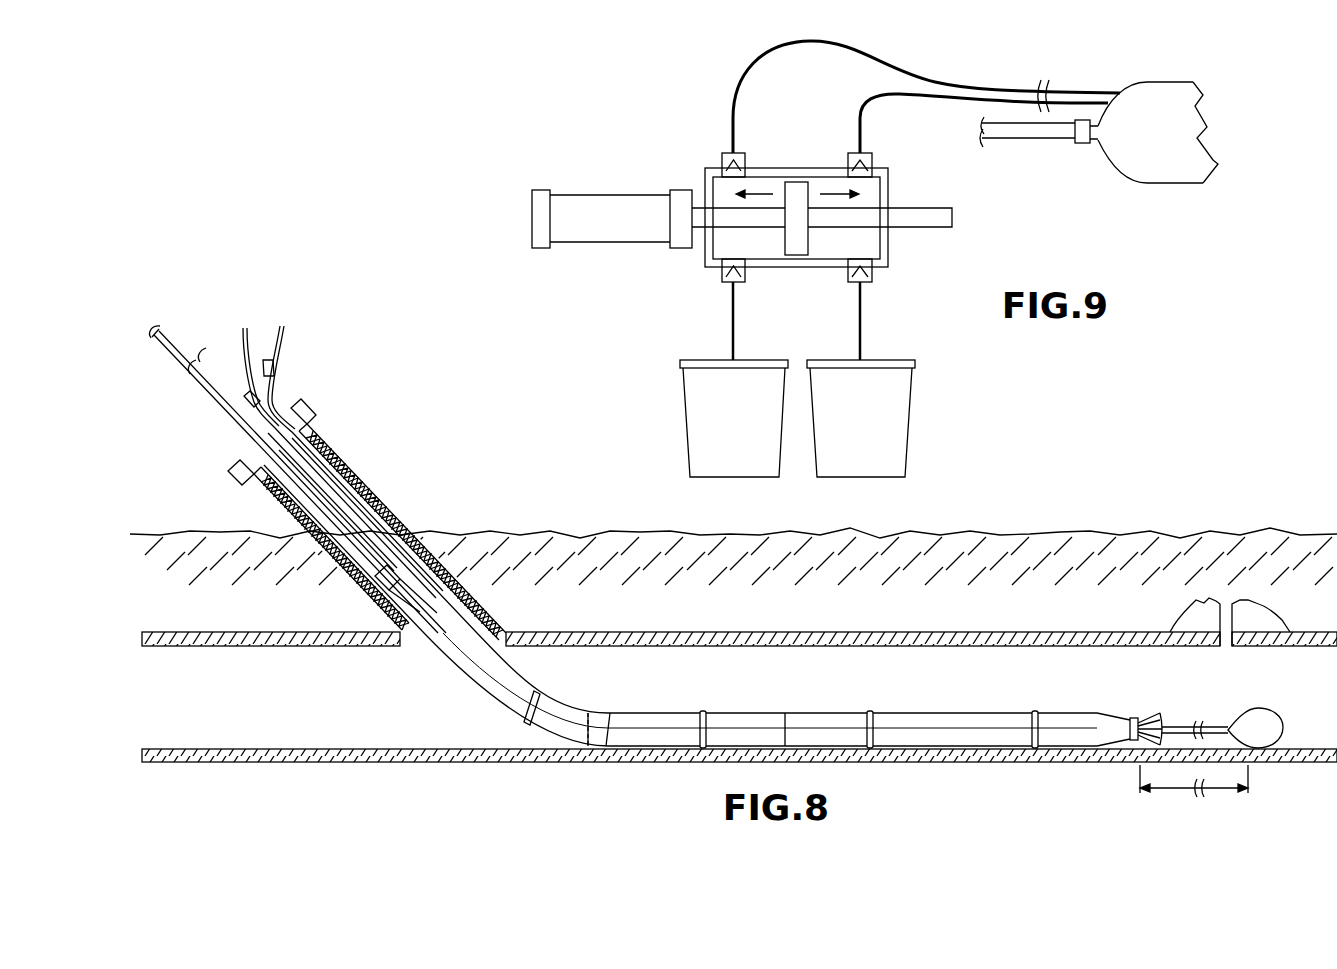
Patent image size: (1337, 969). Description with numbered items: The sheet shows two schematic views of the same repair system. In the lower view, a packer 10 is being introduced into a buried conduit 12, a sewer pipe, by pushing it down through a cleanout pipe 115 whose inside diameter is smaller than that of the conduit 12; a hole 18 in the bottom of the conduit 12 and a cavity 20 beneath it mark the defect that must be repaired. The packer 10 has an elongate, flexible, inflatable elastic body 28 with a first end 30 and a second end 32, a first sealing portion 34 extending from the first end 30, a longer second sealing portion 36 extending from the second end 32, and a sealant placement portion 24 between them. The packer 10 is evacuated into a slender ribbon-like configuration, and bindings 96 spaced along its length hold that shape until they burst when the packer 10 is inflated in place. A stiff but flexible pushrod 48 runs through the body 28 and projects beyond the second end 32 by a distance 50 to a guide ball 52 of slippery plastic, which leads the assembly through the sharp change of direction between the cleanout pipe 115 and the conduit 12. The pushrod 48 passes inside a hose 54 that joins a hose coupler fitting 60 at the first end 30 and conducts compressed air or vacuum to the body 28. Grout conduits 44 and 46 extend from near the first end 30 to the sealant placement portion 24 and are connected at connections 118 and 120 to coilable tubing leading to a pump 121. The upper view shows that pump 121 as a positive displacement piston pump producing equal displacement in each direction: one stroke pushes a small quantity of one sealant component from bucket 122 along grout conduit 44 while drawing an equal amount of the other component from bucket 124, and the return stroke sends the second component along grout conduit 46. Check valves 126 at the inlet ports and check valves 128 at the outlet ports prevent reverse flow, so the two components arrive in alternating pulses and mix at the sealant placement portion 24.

In FIG. 8, the packer 10 is at (780, 694).
In FIG. 9, the packer 10 is at (1222, 101).
In FIG. 8, the conduit 12 is at (697, 630).
In FIG. 8, the hole 18 is at (1228, 631).
In FIG. 8, the cavity 20 is at (1262, 602).
In FIG. 8, the sealant placement portion 24 is at (667, 712).
In FIG. 8, the body 28 is at (462, 688).
In FIG. 8, the first end 30 is at (383, 616).
In FIG. 9, the first end 30 is at (1118, 172).
In FIG. 8, the second end 32 is at (1110, 713).
In FIG. 8, the first sealing portion 34 is at (507, 668).
In FIG. 9, the first sealing portion 34 is at (1190, 185).
In FIG. 8, the second sealing portion 36 is at (943, 712).
In FIG. 8, the grout conduit 44 is at (262, 442).
In FIG. 9, the grout conduit 44 is at (932, 84).
In FIG. 8, the grout conduit 46 is at (282, 400).
In FIG. 9, the grout conduit 46 is at (941, 108).
In FIG. 8, the pushrod 48 is at (172, 345).
In FIG. 8, the distance 50 is at (1180, 795).
In FIG. 8, the guide ball 52 is at (1272, 710).
In FIG. 8, the hose 54 is at (210, 395).
In FIG. 9, the hose 54 is at (1030, 142).
In FIG. 9, the hose coupler fitting 60 is at (1082, 146).
In FIG. 8, the bindings 96 is at (524, 722).
In FIG. 8, the cleanout pipe 115 is at (330, 440).
In FIG. 8, the connection 118 is at (260, 423).
In FIG. 8, the connection 120 is at (248, 352).
In FIG. 9, the pump 121 is at (888, 250).
In FIG. 9, the bucket 122 is at (683, 425).
In FIG. 9, the bucket 124 is at (912, 425).
In FIG. 9, the check valve 126 is at (730, 283).
In FIG. 9, the check valve 128 is at (720, 157).